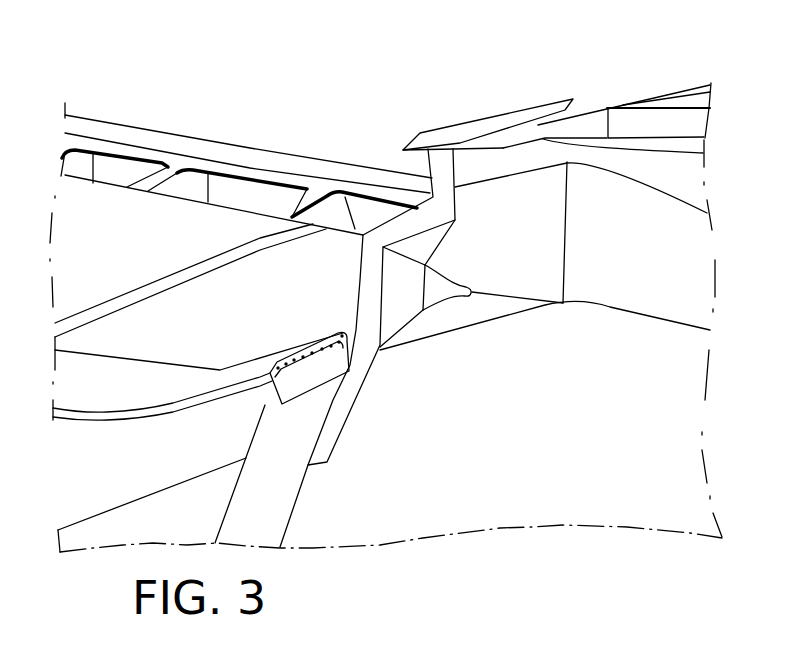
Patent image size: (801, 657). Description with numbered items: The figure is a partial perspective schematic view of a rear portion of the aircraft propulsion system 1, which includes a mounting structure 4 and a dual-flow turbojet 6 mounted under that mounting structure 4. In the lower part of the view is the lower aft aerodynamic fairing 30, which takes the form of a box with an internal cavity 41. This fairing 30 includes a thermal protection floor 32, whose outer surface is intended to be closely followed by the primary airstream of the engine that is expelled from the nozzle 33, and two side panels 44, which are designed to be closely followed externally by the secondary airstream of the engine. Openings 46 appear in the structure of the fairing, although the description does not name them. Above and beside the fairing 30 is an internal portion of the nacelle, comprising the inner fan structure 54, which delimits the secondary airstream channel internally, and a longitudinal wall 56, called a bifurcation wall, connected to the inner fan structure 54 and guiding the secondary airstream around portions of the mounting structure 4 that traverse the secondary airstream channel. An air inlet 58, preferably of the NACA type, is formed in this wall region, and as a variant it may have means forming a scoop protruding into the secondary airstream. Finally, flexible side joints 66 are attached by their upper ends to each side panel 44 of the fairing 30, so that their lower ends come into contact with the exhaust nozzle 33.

The propulsion system 1 is at (429, 114).
The mounting structure 4 is at (289, 144).
The dual-flow turbojet 6 is at (647, 84).
The lower aft aerodynamic fairing 30 is at (106, 263).
The thermal protection floor 32 is at (90, 420).
The nozzle 33 is at (263, 440).
The internal cavity 41 is at (250, 205).
The side panels 44 is at (245, 319).
The apertures 46 is at (186, 186).
The inner fan structure 54 is at (436, 465).
The longitudinal walls 56 is at (615, 256).
The air inlet 58 is at (443, 270).
The flexible side joints 66 is at (270, 389).